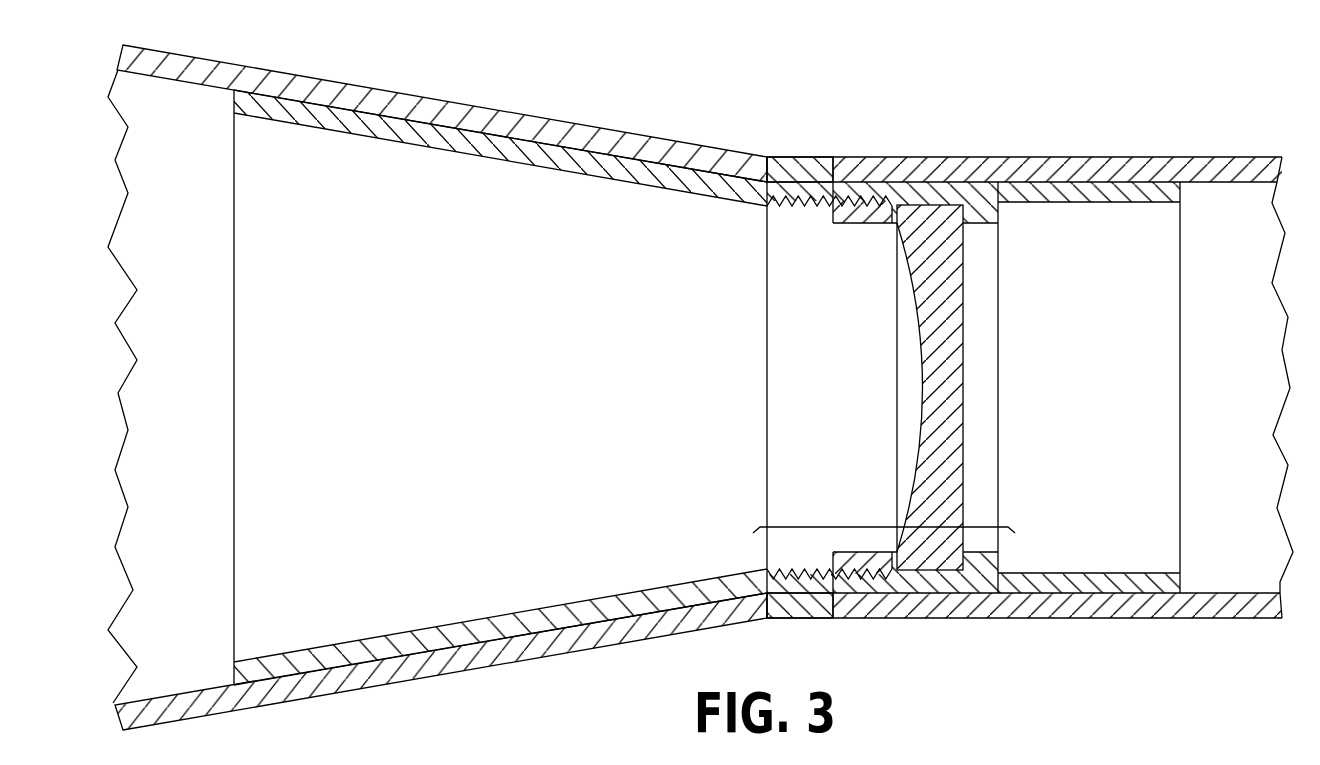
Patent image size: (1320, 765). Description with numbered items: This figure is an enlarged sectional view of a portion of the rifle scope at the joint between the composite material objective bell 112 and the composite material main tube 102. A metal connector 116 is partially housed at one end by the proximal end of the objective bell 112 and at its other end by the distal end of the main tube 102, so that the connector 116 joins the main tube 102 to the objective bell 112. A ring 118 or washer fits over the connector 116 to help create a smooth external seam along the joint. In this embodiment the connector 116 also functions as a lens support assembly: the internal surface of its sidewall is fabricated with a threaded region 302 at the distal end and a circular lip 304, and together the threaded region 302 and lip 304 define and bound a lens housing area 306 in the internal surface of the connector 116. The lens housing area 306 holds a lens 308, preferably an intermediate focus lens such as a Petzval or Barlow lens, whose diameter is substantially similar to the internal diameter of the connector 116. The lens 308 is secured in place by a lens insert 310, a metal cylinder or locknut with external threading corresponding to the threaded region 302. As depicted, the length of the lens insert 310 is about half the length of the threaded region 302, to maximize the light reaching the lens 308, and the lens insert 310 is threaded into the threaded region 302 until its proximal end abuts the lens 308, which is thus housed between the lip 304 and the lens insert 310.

The main tube 102 is at (1053, 157).
The objective bell 112 is at (451, 100).
The connector 116 is at (634, 159).
The ring 118 is at (803, 157).
The threaded region 302 is at (796, 569).
The circular lip 304 is at (977, 225).
The lens housing area 306 is at (797, 527).
The lens 308 is at (965, 388).
The lens insert 310 is at (867, 224).